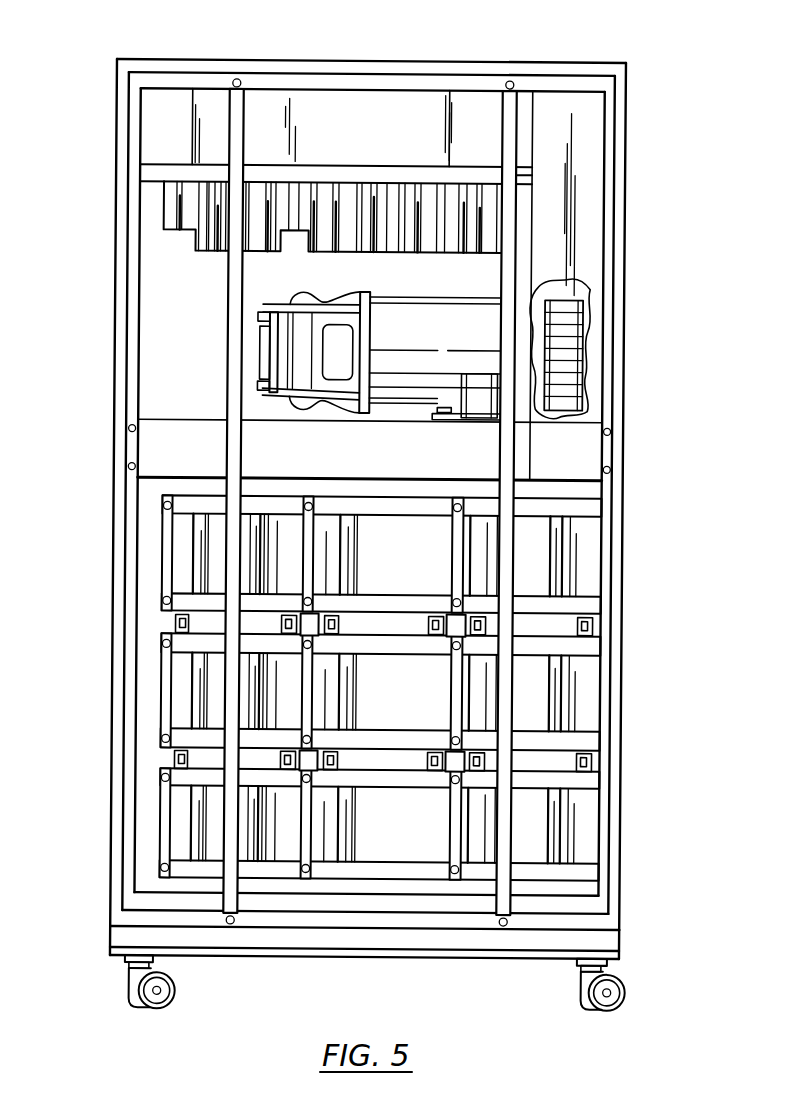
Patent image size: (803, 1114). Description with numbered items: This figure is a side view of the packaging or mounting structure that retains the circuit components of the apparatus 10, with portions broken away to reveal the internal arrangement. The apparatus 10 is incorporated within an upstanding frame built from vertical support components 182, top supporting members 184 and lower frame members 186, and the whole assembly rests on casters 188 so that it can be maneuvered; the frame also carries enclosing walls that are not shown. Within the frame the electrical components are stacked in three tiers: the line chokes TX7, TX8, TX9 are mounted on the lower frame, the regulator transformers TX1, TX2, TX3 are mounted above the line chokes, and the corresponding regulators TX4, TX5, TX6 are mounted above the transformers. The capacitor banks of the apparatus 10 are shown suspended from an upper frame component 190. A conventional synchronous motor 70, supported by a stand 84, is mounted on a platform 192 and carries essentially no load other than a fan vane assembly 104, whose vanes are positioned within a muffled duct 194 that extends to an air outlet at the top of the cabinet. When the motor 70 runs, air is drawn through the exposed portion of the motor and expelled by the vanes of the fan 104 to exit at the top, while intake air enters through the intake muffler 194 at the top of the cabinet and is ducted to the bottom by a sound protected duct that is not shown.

The apparatus 10 is at (369, 508).
The synchronous motor 70 is at (457, 289).
The stand 84 is at (484, 406).
The fan vane assembly 104 is at (570, 298).
The vertical support components 182 is at (118, 347).
The top supporting members 184 is at (279, 60).
The lower frame members 186 is at (389, 940).
The casters 188 is at (135, 987).
The upper frame component 190 is at (150, 205).
The platform 192 is at (587, 448).
The muffled duct 194 is at (476, 120).
The regulator transformer TX1 is at (207, 697).
The regulator transformer TX2 is at (363, 666).
The regulator transformer TX3 is at (549, 690).
The regulator TX4 is at (211, 555).
The regulator TX5 is at (387, 528).
The regulator TX6 is at (554, 552).
The line choke TX7 is at (206, 823).
The line choke TX8 is at (360, 810).
The line choke TX9 is at (553, 820).